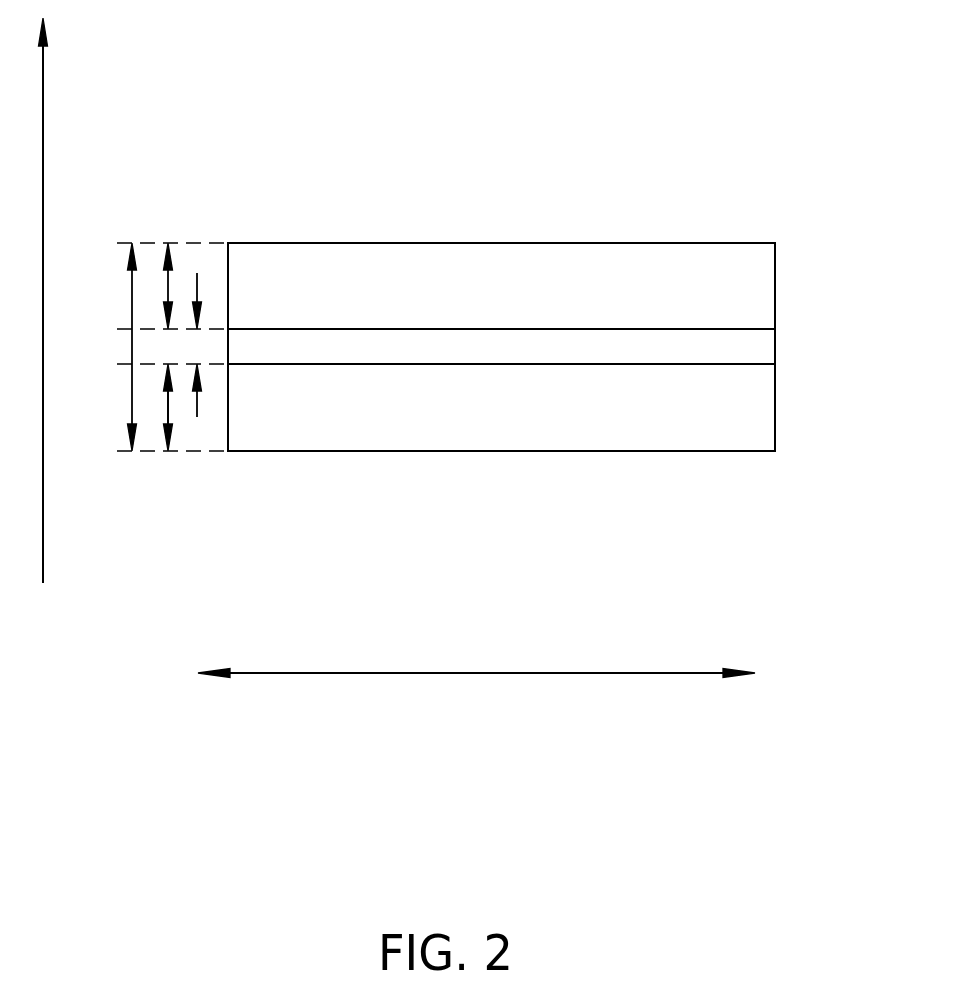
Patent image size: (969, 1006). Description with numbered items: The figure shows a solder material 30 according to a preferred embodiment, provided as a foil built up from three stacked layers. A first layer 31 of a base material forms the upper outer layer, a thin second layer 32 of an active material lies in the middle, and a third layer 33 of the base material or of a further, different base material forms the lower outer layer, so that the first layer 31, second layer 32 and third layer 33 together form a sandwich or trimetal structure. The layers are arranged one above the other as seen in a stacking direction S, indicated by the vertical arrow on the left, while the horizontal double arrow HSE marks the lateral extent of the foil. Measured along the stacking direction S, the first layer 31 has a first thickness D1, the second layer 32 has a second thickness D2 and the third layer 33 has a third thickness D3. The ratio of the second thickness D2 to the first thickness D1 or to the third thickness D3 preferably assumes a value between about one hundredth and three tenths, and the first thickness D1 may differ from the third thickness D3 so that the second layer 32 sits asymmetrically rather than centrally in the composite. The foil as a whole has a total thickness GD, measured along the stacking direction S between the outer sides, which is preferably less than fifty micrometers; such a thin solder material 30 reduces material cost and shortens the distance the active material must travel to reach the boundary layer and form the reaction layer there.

The solder material 30 is at (802, 140).
The first layer 31 is at (533, 288).
The second layer 32 is at (755, 343).
The third layer 33 is at (533, 410).
The stacking direction S is at (43, 120).
The total thickness GD is at (132, 345).
The first thickness D1 is at (168, 285).
The second thickness D2 is at (199, 292).
The third thickness D3 is at (168, 407).
The horizontal extent direction HSE is at (518, 673).